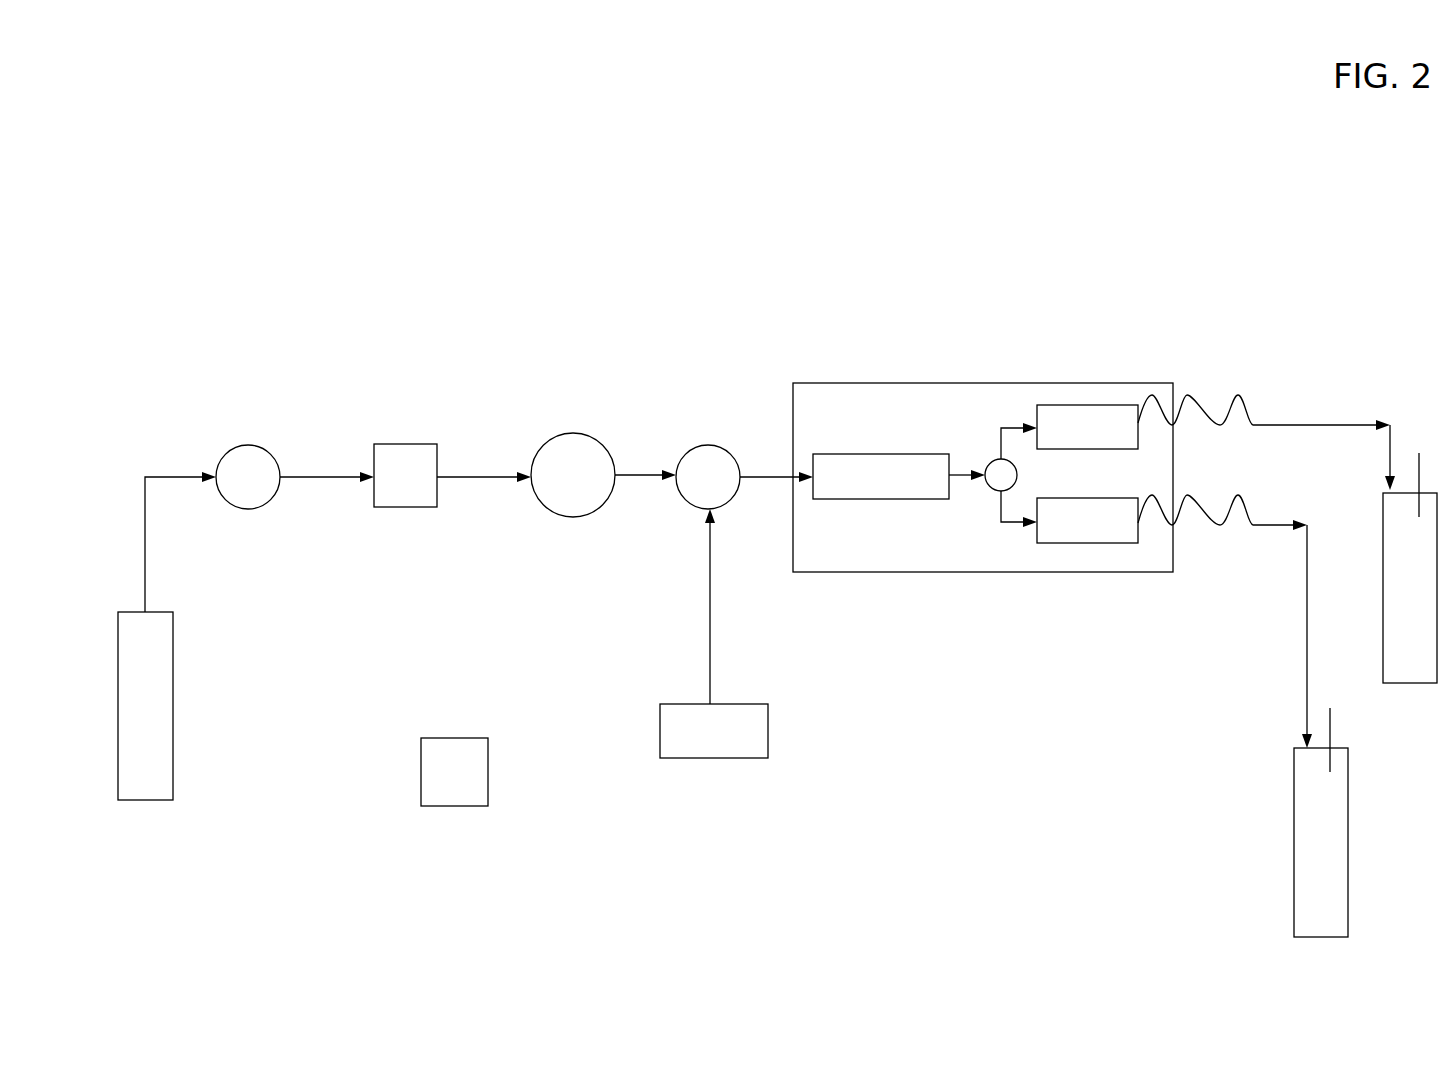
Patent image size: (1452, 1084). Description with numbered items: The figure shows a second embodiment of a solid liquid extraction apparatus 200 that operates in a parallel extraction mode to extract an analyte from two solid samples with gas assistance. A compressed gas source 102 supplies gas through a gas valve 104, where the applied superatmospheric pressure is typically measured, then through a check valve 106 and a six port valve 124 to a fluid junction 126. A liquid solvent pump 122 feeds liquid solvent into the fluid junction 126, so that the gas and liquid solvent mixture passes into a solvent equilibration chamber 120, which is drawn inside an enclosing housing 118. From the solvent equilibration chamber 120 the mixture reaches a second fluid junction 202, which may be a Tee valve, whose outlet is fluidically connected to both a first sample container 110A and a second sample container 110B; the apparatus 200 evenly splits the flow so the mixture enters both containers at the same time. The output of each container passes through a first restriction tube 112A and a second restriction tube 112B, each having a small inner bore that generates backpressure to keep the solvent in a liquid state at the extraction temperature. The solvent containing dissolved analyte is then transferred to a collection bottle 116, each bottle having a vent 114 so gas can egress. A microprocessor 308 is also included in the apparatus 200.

The apparatus 200 is at (988, 195).
The compressed gas source 102 is at (173, 783).
The gas valve 104 is at (246, 445).
The check valve 106 is at (404, 444).
The six port valve 124 is at (560, 433).
The fluid junction 126 is at (708, 445).
The manifold housing 118 is at (895, 572).
The solvent equilibration chamber 120 is at (875, 454).
The second fluid junction 202 is at (990, 489).
The first sample container 110A is at (1073, 405).
The second sample container 110B is at (1085, 543).
The first restriction tube 112A is at (1205, 420).
The second restriction tube 112B is at (1217, 525).
The vent 114 is at (1420, 470).
The collection bottle 116 is at (1294, 770).
The liquid solvent pump 122 is at (768, 740).
The microprocessor 308 is at (488, 790).